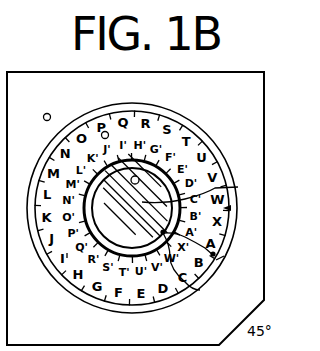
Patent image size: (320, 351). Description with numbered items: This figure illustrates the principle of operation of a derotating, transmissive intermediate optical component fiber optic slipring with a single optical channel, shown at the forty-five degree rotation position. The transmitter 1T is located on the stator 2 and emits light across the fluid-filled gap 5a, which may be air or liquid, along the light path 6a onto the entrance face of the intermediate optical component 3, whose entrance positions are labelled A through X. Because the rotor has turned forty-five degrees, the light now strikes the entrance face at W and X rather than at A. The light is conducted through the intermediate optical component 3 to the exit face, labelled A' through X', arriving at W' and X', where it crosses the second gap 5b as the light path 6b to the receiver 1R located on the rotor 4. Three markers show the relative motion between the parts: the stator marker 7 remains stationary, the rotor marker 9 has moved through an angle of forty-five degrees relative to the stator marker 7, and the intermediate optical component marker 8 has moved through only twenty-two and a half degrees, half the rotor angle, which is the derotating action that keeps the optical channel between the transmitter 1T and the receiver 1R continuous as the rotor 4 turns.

The stator 2 is at (135, 208).
The intermediate optical component 3 is at (66, 248).
The rotor 4 is at (195, 191).
The gap 5a is at (216, 148).
The second gap 5b is at (193, 122).
The light path 6a is at (228, 222).
The light path 6b is at (200, 290).
The stator marker 7 is at (49, 113).
The intermediate optical component marker 8 is at (105, 131).
The rotor marker 9 is at (139, 181).
The transmitter 1T is at (230, 208).
The receiver 1R is at (232, 252).